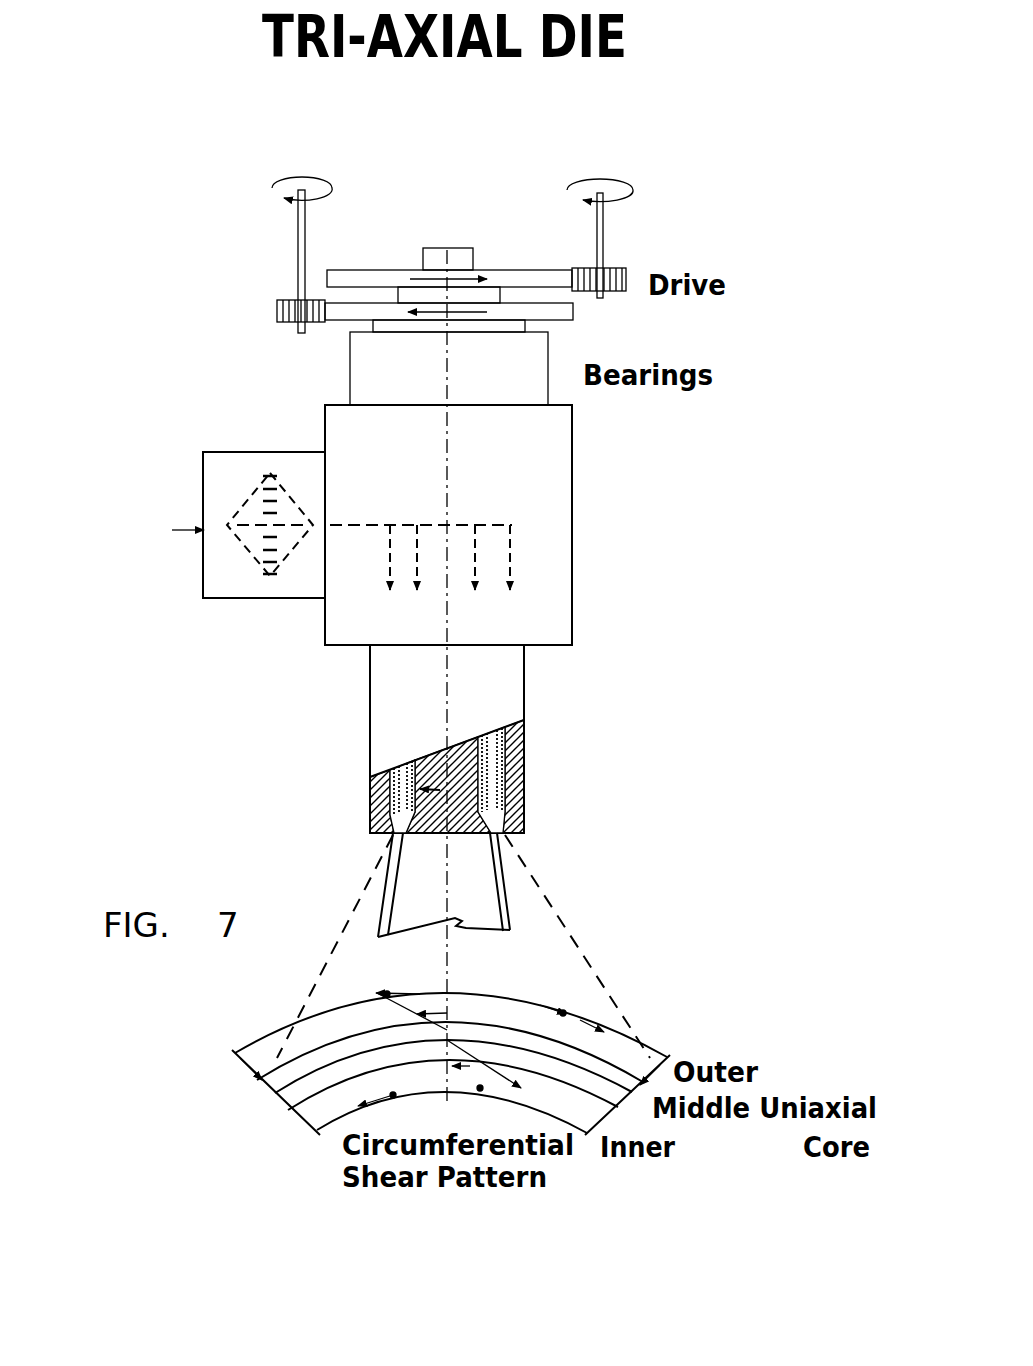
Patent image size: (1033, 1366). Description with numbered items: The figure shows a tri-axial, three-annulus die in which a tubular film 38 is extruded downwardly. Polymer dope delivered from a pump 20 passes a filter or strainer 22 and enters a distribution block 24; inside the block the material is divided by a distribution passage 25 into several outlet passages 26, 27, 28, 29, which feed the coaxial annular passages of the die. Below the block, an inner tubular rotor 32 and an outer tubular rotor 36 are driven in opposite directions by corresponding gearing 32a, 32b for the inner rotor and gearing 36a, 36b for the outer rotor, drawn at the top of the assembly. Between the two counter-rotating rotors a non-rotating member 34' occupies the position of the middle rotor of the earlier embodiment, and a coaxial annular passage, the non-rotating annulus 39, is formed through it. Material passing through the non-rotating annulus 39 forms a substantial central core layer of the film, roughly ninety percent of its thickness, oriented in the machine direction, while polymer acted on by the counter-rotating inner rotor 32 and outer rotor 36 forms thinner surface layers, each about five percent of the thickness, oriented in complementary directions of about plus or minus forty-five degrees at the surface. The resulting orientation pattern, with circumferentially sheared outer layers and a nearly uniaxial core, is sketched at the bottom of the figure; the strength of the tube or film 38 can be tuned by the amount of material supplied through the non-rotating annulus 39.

The dope from pump 20 is at (126, 474).
The filter/strainer 22 is at (282, 602).
The distribution block 24 is at (735, 569).
The distribution manifold passage 25 is at (362, 522).
The distribution outlet passage 26 is at (387, 543).
The distribution outlet passage 27 is at (420, 565).
The distribution outlet passage 28 is at (471, 560).
The distribution outlet passage 29 is at (511, 545).
The inner tubular rotor 32 is at (180, 792).
The gearing 32a is at (355, 270).
The gearing 32b is at (572, 272).
The non-rotating member 34' is at (476, 733).
The outer tubular rotor 36 is at (527, 765).
The gearing 36a is at (573, 312).
The gearing 36b is at (277, 311).
The tubular film 38 is at (519, 883).
The non-rotating annulus 39 is at (525, 795).